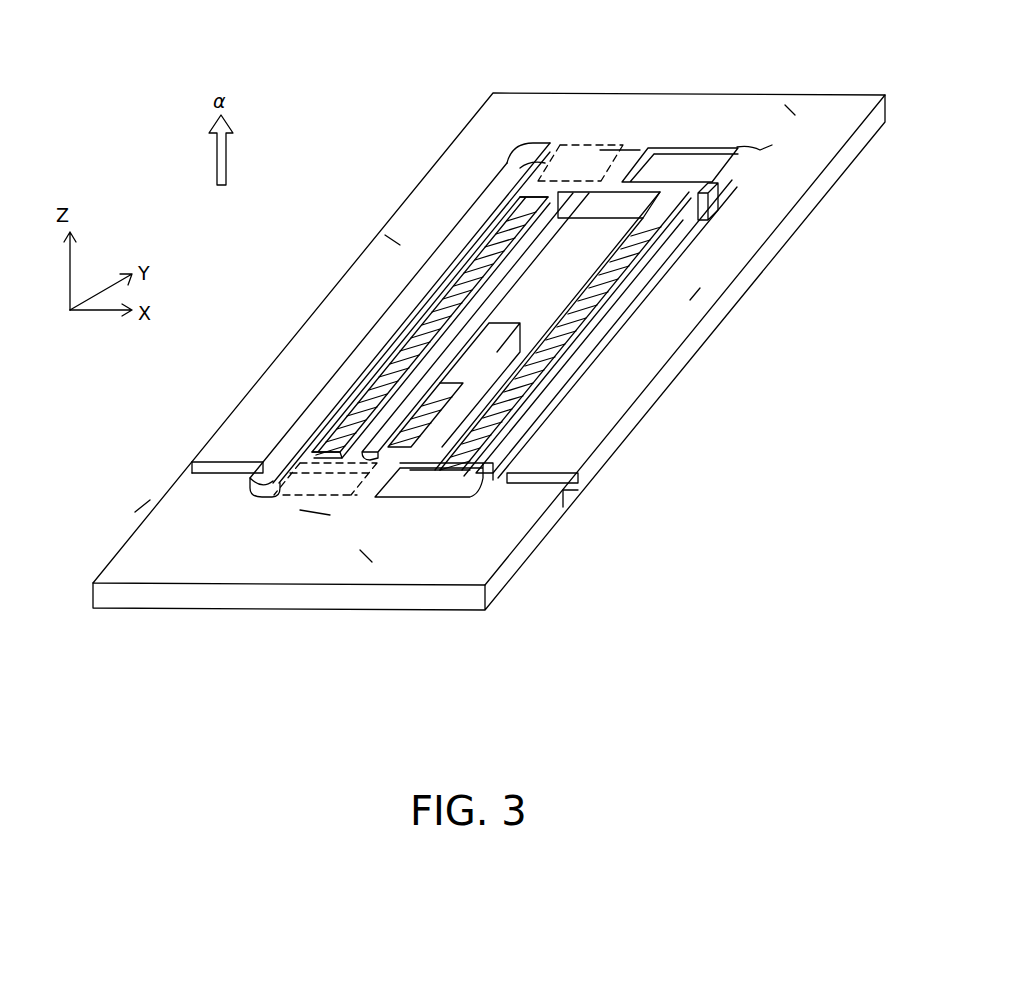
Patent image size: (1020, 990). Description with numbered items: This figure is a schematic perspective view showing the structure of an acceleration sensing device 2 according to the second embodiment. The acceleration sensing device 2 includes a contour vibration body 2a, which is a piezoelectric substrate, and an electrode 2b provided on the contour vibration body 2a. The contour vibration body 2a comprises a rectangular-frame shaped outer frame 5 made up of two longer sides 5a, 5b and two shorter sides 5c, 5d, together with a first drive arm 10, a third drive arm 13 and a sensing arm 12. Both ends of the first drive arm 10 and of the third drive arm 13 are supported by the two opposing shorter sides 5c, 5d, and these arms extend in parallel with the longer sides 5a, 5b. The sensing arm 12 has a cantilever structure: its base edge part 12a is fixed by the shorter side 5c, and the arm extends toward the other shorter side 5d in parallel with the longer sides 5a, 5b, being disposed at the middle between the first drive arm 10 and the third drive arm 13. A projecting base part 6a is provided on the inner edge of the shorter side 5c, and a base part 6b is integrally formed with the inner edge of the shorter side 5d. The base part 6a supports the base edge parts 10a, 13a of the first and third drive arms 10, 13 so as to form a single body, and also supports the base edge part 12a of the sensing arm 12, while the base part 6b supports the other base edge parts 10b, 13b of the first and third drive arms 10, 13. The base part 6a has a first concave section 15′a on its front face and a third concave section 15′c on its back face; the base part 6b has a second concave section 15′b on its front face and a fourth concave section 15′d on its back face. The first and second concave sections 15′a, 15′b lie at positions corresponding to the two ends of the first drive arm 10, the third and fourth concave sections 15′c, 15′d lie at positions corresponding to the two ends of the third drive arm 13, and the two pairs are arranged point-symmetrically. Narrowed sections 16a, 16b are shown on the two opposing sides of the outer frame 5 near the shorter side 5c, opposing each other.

The acceleration sensing device 2 is at (427, 82).
The contour vibration body 2a is at (125, 518).
The electrode 2b is at (616, 317).
The outer frame 5 is at (826, 241).
The longer side 5a is at (710, 290).
The longer side 5b is at (395, 240).
The shorter side 5c is at (368, 557).
The shorter side 5d is at (790, 110).
The base part 6a is at (326, 527).
The base part 6b is at (631, 137).
The first drive arm 10 is at (560, 372).
The base edge part 10a is at (500, 447).
The base edge part 10b is at (745, 165).
The sensing arm 12 is at (510, 323).
The base edge part 12a is at (390, 460).
The third drive arm 13 is at (405, 330).
The base edge part 13a is at (357, 427).
The base edge part 13b is at (540, 185).
The first concave section 15′a is at (435, 485).
The second concave section 15′b is at (740, 160).
The third concave section 15′c is at (285, 497).
The fourth concave section 15′d is at (560, 145).
The step portion 16a is at (587, 491).
The step portion 16b is at (193, 468).